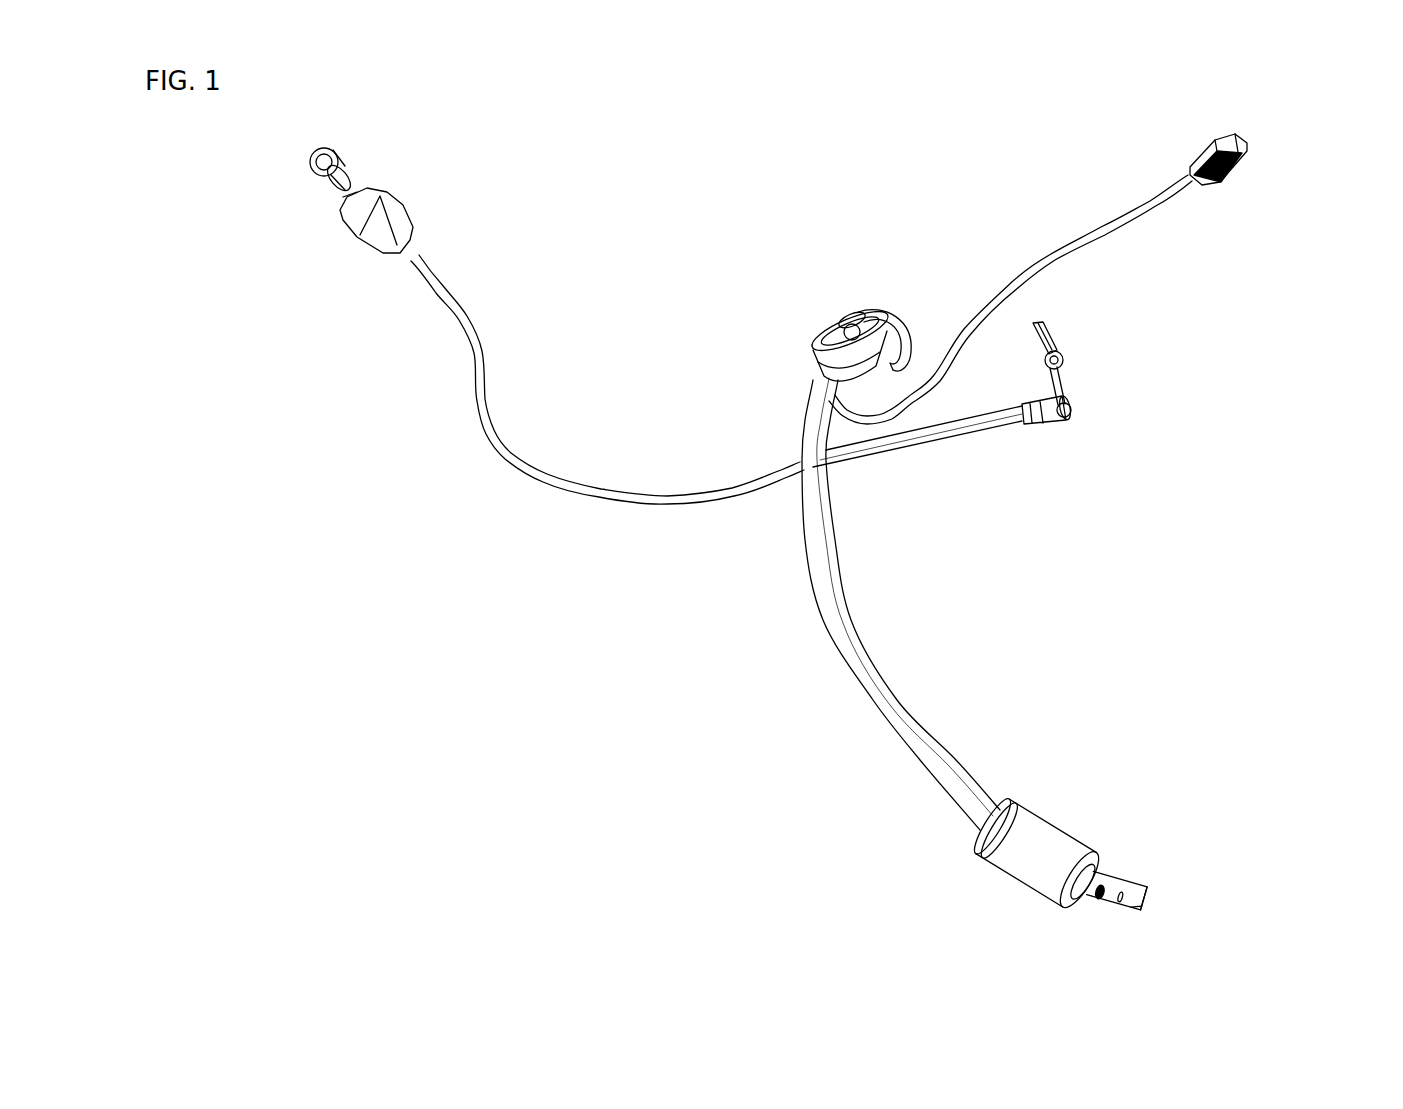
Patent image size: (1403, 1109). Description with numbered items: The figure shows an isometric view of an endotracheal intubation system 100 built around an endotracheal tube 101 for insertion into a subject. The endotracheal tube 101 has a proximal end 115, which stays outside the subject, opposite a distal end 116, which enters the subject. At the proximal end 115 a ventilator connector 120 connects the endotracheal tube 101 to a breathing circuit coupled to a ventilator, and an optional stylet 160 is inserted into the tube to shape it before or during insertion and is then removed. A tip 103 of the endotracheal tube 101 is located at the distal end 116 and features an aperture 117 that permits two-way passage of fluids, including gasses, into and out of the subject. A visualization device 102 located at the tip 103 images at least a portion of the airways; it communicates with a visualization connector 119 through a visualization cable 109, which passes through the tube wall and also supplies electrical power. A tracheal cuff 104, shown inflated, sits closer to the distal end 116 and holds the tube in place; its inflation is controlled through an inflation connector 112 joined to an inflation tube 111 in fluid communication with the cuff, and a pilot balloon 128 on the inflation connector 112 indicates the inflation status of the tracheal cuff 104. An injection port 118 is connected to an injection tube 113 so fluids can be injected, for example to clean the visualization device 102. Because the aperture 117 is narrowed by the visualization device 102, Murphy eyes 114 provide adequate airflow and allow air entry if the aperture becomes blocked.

The endotracheal intubation system 100 is at (773, 400).
The endotracheal tube 101 is at (855, 620).
The visualization device 102 is at (1143, 892).
The tip 103 is at (1147, 880).
The tracheal cuff 104 is at (1033, 833).
The visualization cable 109 is at (1055, 256).
The inflation tube 111 is at (467, 313).
The inflation connector 112 is at (333, 157).
The injection tube 113 is at (913, 430).
The Murphy eye 114 is at (1097, 900).
The proximal end 115 is at (871, 216).
The distal end 116 is at (1191, 866).
The aperture 117 is at (1140, 903).
The injection port 118 is at (1073, 403).
The visualization connector 119 is at (1247, 152).
The ventilator connector 120 is at (828, 345).
The pilot balloon 128 is at (400, 207).
The stylet 160 is at (882, 320).